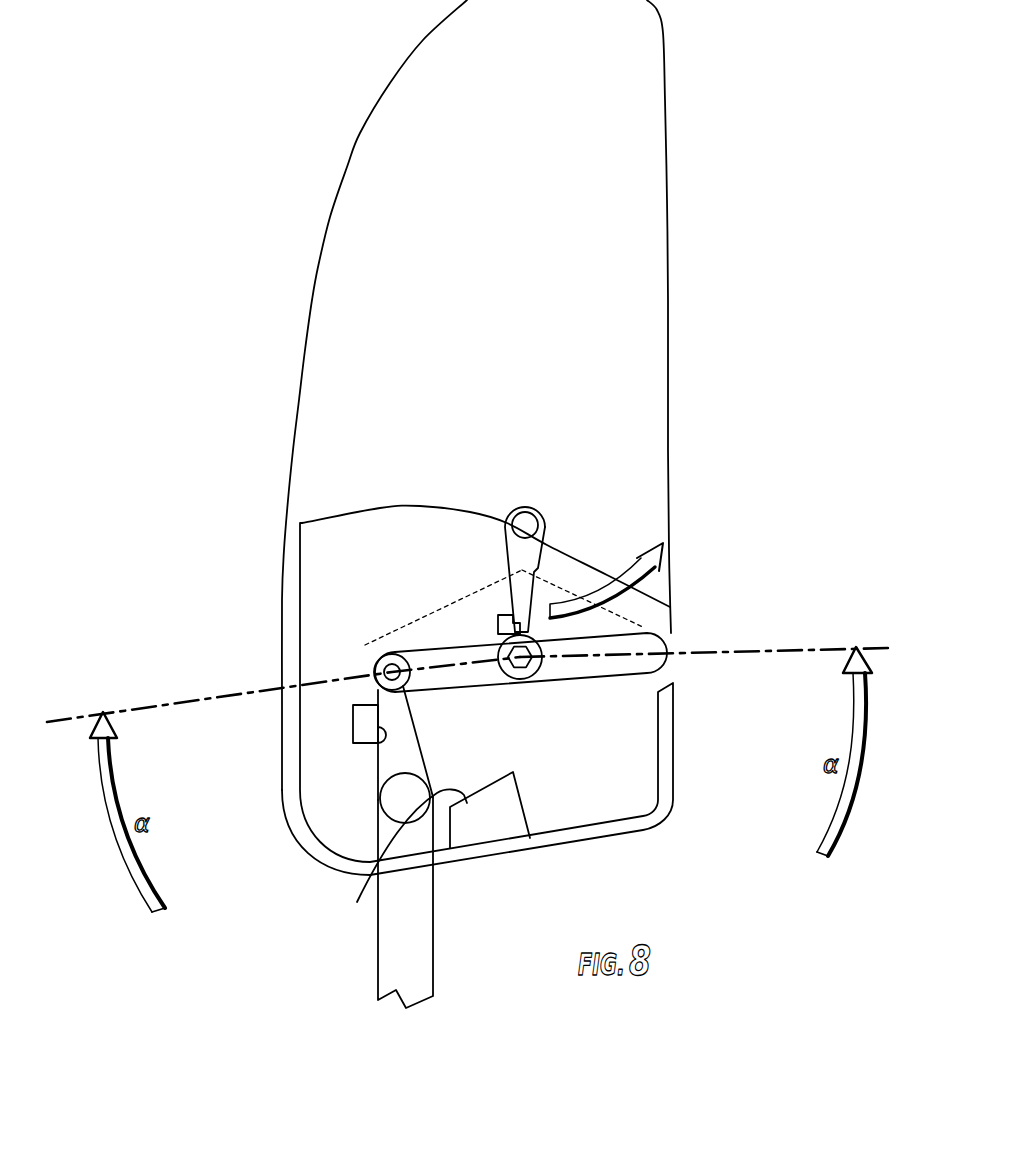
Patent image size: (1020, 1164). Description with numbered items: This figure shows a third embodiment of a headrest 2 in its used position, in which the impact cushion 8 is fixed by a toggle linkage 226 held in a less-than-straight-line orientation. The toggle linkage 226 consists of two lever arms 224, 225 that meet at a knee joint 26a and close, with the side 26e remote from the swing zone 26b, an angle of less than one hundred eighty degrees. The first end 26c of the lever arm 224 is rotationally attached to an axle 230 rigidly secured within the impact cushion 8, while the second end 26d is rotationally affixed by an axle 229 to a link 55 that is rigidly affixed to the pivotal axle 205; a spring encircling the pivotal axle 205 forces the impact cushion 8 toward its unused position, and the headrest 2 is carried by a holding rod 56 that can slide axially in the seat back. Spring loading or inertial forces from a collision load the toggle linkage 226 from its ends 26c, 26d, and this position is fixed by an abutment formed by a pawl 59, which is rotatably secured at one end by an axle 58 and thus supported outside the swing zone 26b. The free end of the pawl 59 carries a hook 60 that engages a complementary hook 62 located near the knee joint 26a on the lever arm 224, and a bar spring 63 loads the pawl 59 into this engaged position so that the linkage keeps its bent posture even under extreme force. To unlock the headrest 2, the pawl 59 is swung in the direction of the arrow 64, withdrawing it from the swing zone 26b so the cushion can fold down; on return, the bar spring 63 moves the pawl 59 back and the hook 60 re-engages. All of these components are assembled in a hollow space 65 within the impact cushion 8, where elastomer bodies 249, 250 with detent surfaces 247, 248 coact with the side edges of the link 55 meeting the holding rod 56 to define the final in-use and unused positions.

The headrest 2 is at (658, 145).
The impact cushion 8 is at (618, 340).
The axle 58 is at (523, 520).
The bar spring 63 is at (525, 590).
The pawl 59 is at (535, 572).
The arrow 64 is at (553, 617).
The hook 60 is at (552, 604).
The complementary hook 62 is at (513, 620).
The swing zone 26b is at (458, 620).
The first end 26c is at (670, 658).
The lever arm 225 is at (447, 670).
The axle 229 is at (388, 653).
The second end 26d is at (357, 667).
The toggle linkage 226 is at (633, 656).
The lever arm 224 is at (605, 657).
The axle 230 is at (675, 648).
The knee joint 26a is at (514, 690).
The side 26e is at (537, 693).
The detent surface 247 is at (378, 755).
The holding rod 56 is at (434, 914).
The elastomer body 249 is at (353, 720).
The link 55 is at (397, 748).
The pivotal axle 205 is at (398, 802).
The detent surface 248 is at (357, 902).
The elastomer body 250 is at (515, 820).
The hollow space 65 is at (603, 763).